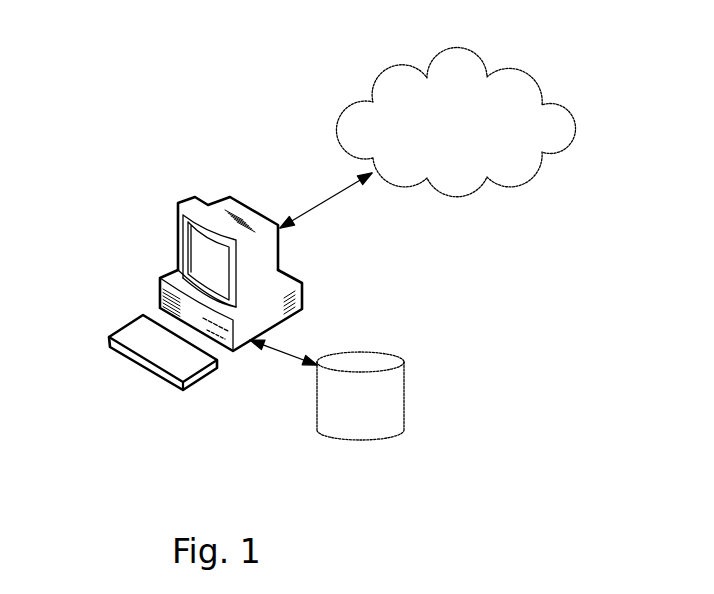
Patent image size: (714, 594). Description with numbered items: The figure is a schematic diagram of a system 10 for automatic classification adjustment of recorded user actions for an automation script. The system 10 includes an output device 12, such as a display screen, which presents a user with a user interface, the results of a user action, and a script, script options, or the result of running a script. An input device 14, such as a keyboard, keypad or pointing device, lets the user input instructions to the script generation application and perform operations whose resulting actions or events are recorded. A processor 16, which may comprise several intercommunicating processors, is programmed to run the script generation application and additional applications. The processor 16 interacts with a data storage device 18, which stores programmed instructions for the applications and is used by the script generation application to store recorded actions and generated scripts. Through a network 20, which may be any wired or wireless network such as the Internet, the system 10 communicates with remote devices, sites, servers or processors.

The system 10 is at (207, 138).
The output device 12 is at (200, 263).
The input device 14 is at (150, 335).
The processor 16 is at (265, 322).
The data storage device 18 is at (405, 403).
The network 20 is at (533, 80).